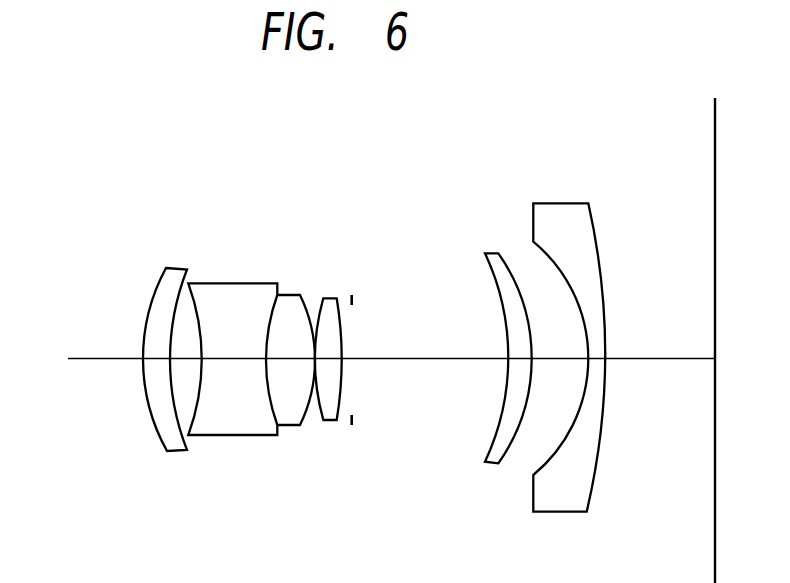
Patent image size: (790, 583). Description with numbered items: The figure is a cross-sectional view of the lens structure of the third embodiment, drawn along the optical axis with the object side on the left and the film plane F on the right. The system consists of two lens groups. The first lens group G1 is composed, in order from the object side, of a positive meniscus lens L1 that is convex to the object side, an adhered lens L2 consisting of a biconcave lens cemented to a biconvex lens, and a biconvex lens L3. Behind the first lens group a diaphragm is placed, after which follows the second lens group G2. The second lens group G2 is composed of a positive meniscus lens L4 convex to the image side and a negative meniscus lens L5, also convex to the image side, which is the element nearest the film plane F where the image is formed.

The first lens group G1 is at (390, 191).
The second lens group G2 is at (607, 151).
The positive meniscus lens L1 is at (173, 267).
The adhered lens L2 is at (312, 263).
The biconvex lens L3 is at (332, 297).
The positive meniscus lens L4 is at (490, 252).
The negative meniscus lens L5 is at (576, 203).
The film plane F is at (711, 323).